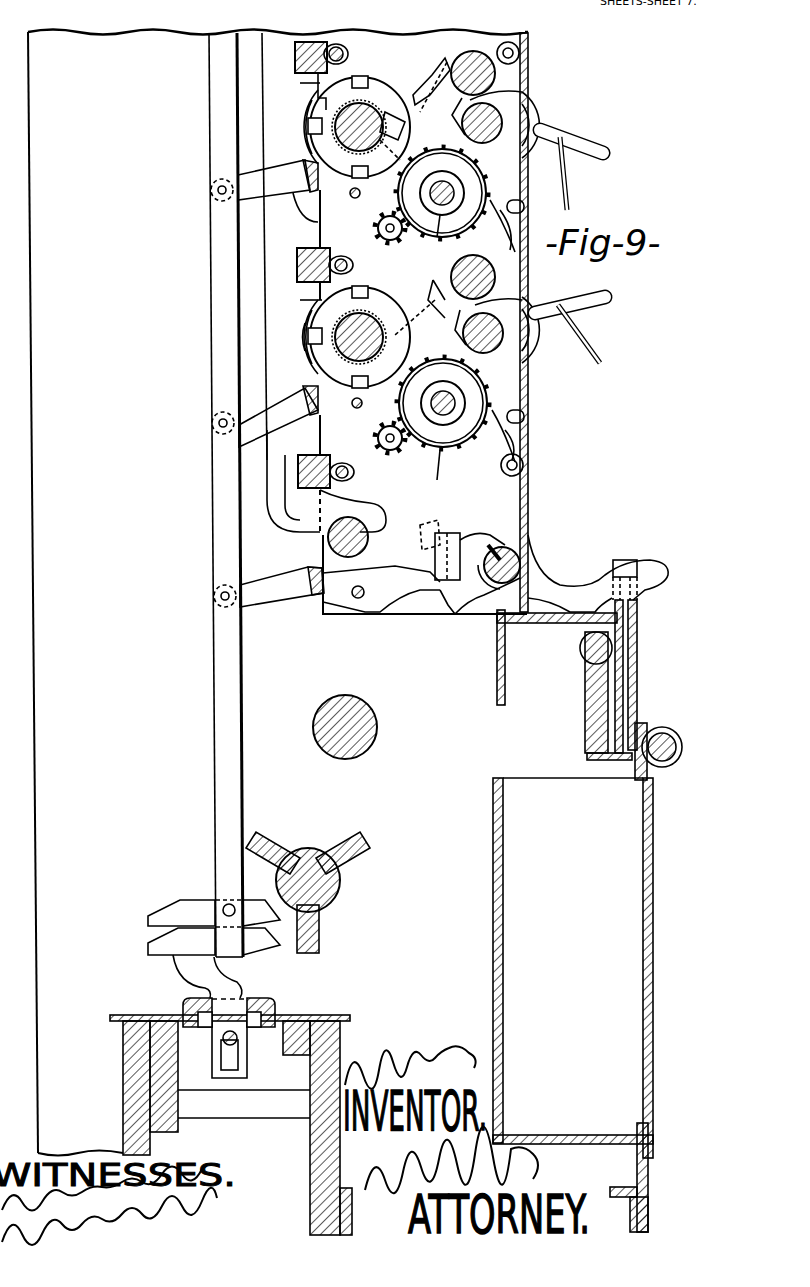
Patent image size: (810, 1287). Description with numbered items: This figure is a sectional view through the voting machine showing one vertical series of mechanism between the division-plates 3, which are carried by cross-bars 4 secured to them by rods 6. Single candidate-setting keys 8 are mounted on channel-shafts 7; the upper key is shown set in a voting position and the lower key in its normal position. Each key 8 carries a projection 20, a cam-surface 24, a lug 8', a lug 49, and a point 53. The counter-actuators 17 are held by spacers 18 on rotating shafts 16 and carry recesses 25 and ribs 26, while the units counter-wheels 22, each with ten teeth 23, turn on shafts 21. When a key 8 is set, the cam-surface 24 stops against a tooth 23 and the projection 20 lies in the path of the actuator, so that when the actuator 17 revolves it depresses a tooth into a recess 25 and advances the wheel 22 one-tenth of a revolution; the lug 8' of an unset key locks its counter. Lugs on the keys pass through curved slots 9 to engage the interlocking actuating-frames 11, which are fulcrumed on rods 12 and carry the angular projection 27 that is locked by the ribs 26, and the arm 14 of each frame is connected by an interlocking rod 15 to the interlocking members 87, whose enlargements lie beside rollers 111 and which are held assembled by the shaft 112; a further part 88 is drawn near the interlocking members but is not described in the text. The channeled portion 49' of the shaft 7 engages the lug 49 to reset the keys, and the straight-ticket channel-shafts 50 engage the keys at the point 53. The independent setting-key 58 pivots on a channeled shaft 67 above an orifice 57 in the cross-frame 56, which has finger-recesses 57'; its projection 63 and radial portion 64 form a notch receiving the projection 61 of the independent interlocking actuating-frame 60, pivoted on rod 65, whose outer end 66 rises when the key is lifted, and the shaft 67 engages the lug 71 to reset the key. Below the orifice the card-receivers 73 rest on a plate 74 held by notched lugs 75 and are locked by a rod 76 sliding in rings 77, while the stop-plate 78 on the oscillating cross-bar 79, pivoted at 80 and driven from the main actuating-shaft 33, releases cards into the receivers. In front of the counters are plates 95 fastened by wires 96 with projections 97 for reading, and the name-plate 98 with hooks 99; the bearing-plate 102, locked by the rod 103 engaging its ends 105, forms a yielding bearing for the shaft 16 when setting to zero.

The division-plates 3 is at (422, 526).
The cross-bars 4 is at (295, 58).
The rods 6 is at (353, 266).
The channel-shafts 7 is at (498, 132).
The single candidate-setting keys 8 is at (547, 228).
The lug 8' is at (424, 211).
The curved slots 9 is at (433, 282).
The interlocking actuating-frames 11 is at (290, 178).
The rods 12 is at (353, 198).
The arm 14 is at (249, 192).
The interlocking rods 15 is at (209, 232).
The rotating shafts 16 is at (360, 112).
The counter-actuators 17 is at (320, 300).
The spacers 18 is at (320, 84).
The projection 20 is at (394, 127).
The shafts 21 is at (452, 192).
The units counter-wheels 22 is at (414, 326).
The teeth 23 is at (426, 319).
The cam-surface 24 is at (546, 395).
The recesses 25 is at (425, 80).
The ribs 26 is at (294, 327).
The angular projection 27 is at (310, 140).
The main actuating-shaft 33 is at (343, 708).
The lug 49 is at (517, 222).
The channeled portion 49' is at (600, 243).
The channel-shafts 50 is at (520, 52).
The point 53 is at (525, 88).
The cross-frame 56 is at (638, 690).
The orifices 57 is at (586, 680).
The finger-recesses 57' is at (652, 564).
The independent setting-key 58 is at (555, 588).
The independent interlocking actuating-frame 60 is at (342, 584).
The projection 61 is at (425, 590).
The projection 63 is at (450, 605).
The radial portion 64 is at (456, 556).
The rod 65 is at (362, 600).
The outer end 66 is at (282, 587).
The channeled shafts 67 is at (500, 547).
The lug 71 is at (462, 536).
The card-receivers 73 is at (573, 968).
The plate 74 is at (650, 1172).
The notched lugs 75 is at (630, 1150).
The rod 76 is at (668, 748).
The rings 77 is at (672, 760).
The stop-plate 78 is at (605, 762).
The oscillating cross-bar 79 is at (585, 755).
The pivot 80 is at (580, 648).
The interlocking members 87 is at (258, 945).
The cam 88 is at (308, 850).
The plates 95 is at (529, 490).
The wires 96 is at (520, 58).
The projections 97 is at (528, 236).
The plate 98 is at (530, 205).
The hooks 99 is at (526, 210).
The bearing-plate 102 is at (293, 362).
The rod 103 is at (368, 538).
The ends 105 is at (372, 518).
The rollers 111 is at (190, 1005).
The shaft 112 is at (237, 1040).